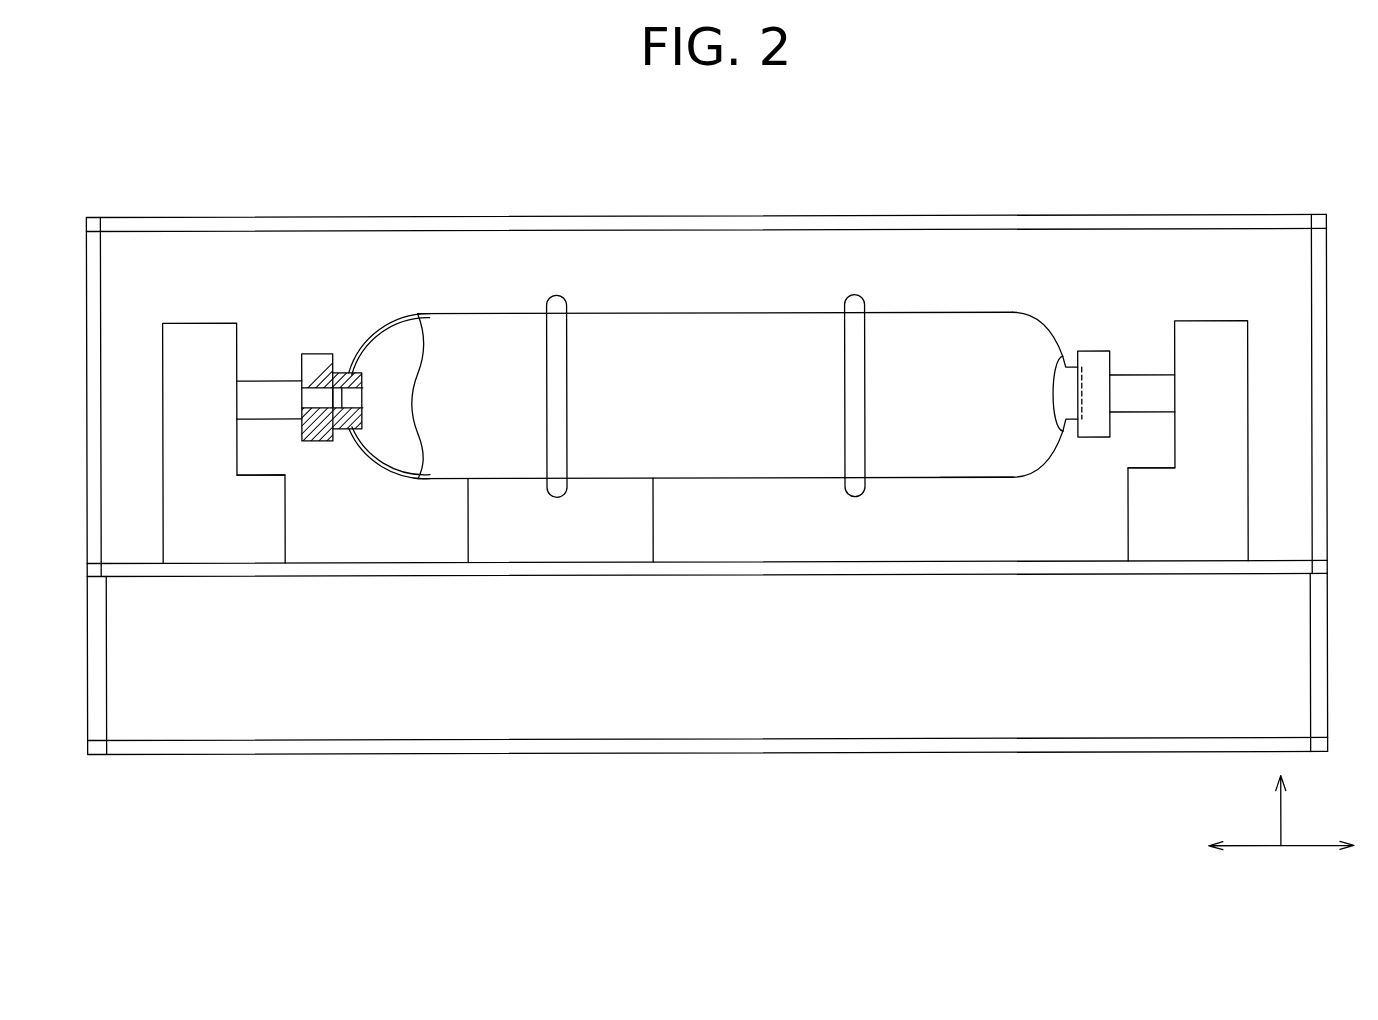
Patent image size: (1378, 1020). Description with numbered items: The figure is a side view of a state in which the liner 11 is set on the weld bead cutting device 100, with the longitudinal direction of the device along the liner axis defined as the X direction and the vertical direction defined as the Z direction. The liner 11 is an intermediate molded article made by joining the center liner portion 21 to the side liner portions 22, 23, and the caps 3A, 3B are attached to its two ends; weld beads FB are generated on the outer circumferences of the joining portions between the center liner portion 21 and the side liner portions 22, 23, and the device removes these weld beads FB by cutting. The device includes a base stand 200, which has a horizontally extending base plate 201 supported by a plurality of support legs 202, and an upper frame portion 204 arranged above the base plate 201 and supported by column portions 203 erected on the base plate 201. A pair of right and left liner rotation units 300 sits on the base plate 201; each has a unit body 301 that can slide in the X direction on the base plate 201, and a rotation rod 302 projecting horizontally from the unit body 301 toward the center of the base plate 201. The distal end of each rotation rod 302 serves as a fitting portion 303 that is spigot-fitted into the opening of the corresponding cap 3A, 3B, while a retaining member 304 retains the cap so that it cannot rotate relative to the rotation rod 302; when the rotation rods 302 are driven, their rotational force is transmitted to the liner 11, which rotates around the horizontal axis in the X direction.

The weld bead cutting device 100 is at (748, 215).
The liner 11 is at (755, 312).
The center liner portion 21 is at (752, 453).
The side liner portion 22 is at (502, 455).
The side liner portion 23 is at (951, 452).
The cap 3A is at (1058, 385).
The cap 3B is at (345, 372).
The weld bead FB is at (560, 357).
The base stand 200 is at (712, 574).
The base plate 201 is at (866, 565).
The support leg 202 is at (98, 660).
The column portion 203 is at (92, 277).
The upper frame portion 204 is at (1020, 218).
The liner rotation unit 300 is at (205, 323).
The unit body 301 is at (265, 537).
The rotation rod 302 is at (277, 380).
The fitting portion 303 is at (318, 397).
The retaining member 304 is at (317, 355).
The X direction X is at (1290, 855).
The Z direction Z is at (1282, 818).